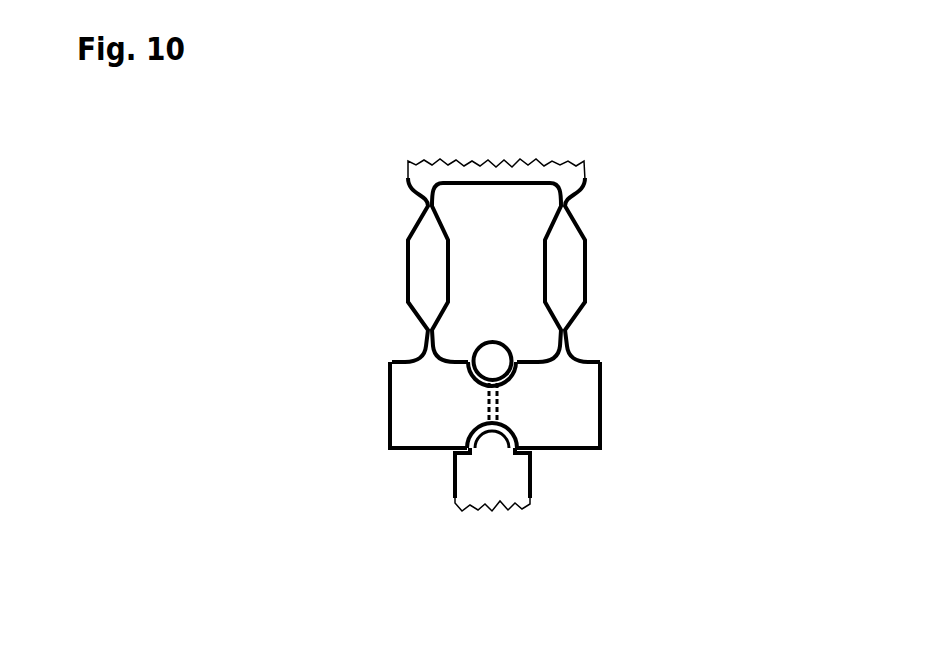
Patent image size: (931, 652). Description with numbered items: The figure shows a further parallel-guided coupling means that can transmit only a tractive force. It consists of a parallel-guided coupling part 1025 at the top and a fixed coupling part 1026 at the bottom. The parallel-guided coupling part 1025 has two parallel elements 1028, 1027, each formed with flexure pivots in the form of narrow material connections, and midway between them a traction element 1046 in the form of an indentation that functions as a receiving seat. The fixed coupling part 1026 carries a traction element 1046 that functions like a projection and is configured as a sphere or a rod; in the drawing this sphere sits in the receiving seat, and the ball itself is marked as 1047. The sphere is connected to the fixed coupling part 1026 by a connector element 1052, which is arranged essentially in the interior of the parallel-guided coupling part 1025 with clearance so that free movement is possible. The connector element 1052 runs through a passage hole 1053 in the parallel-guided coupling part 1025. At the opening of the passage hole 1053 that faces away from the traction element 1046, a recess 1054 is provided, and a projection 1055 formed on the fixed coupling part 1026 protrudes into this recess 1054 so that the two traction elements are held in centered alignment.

The parallel-guided coupling part 1025 is at (628, 347).
The fixed coupling part 1026 is at (558, 492).
The parallel element 1027 is at (567, 260).
The parallel element 1028 is at (423, 258).
The traction element 1046 is at (512, 380).
The ball pivot 1047 is at (497, 352).
The connector element 1052 is at (488, 397).
The passage hole 1053 is at (500, 403).
The recess 1054 is at (472, 431).
The projection 1055 is at (492, 444).